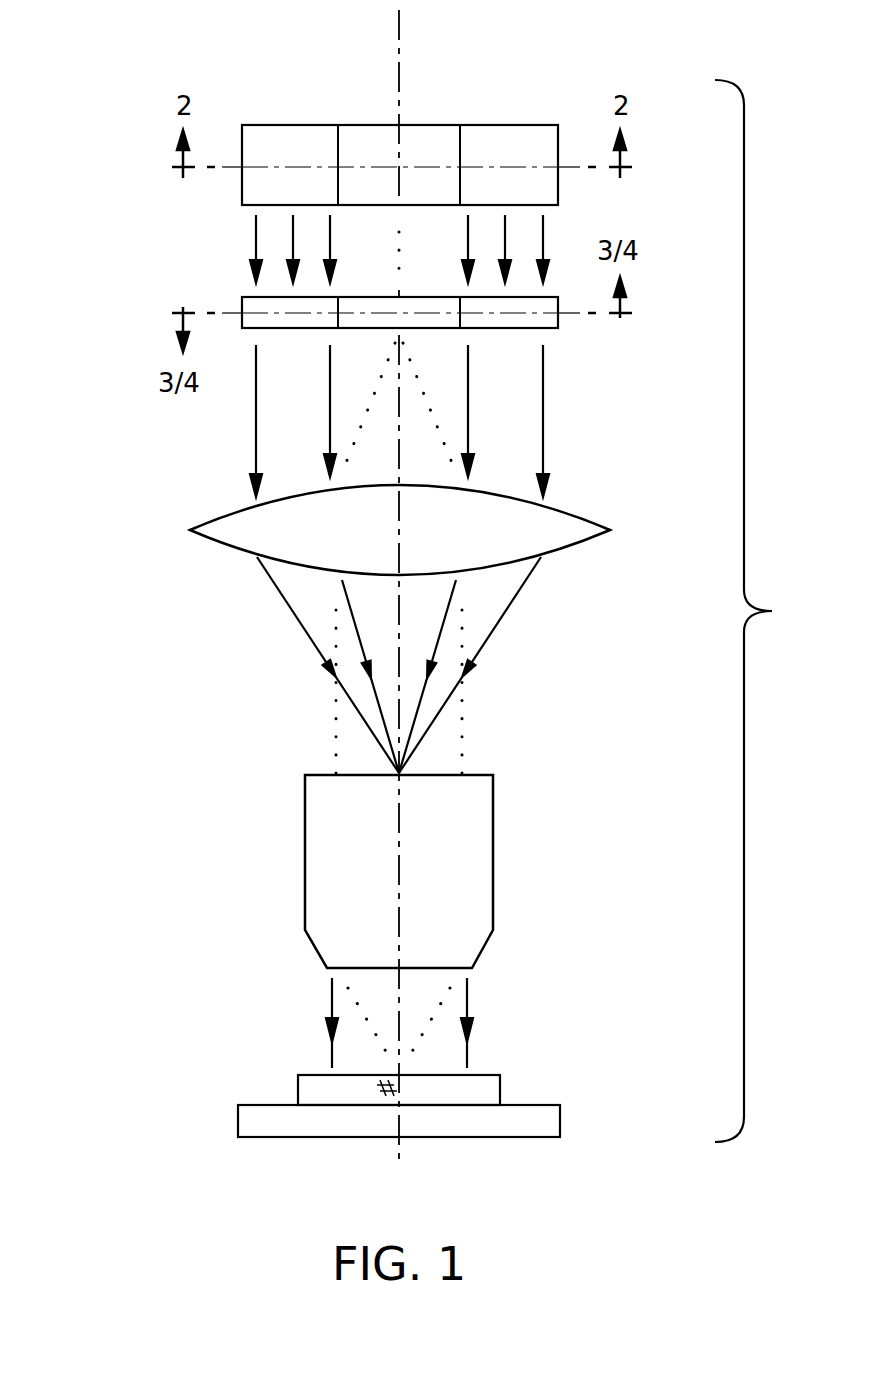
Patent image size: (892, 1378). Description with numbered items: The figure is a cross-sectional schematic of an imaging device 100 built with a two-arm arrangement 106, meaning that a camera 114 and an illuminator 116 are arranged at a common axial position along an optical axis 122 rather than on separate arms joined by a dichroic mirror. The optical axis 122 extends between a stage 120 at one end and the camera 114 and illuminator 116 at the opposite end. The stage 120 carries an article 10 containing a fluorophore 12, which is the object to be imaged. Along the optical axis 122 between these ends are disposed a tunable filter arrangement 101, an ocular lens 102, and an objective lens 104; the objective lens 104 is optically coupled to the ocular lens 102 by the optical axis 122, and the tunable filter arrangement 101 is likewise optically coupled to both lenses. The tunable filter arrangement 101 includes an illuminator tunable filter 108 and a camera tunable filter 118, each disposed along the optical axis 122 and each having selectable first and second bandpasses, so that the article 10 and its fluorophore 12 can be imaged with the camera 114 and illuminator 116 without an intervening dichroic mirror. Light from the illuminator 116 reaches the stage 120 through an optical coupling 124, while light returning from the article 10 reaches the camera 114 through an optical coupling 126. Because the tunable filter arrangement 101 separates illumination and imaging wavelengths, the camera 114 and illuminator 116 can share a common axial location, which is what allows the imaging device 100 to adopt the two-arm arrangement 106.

The imaging device 100 is at (92, 1095).
The tunable filter arrangement 101 is at (228, 283).
The ocular lens 102 is at (487, 541).
The objective lens 104 is at (372, 845).
The two-arm arrangement 106 is at (772, 611).
The illuminator tunable filter 108 is at (298, 328).
The article 10 is at (500, 1088).
The fluorophore 12 is at (383, 1090).
The camera 114 is at (437, 125).
The illuminator 116 is at (309, 181).
The camera tunable filter 118 is at (437, 328).
The stage 120 is at (560, 1117).
The optical axis 122 is at (398, 886).
The optical coupling 124 is at (290, 610).
The optical coupling 126 is at (334, 702).